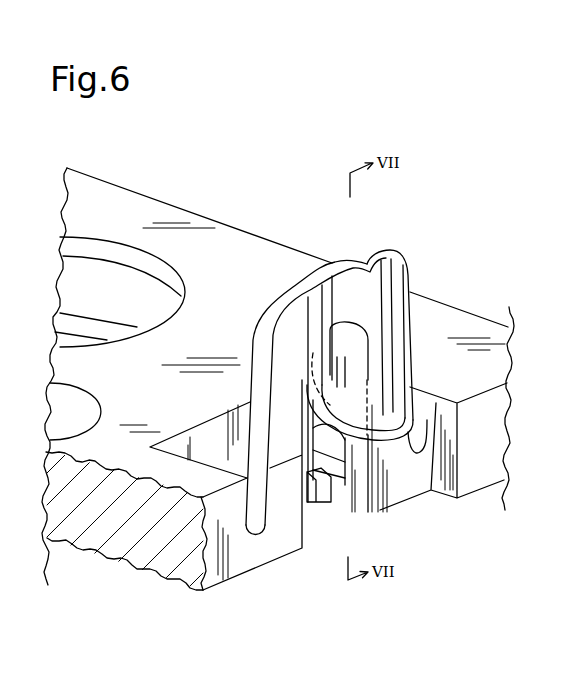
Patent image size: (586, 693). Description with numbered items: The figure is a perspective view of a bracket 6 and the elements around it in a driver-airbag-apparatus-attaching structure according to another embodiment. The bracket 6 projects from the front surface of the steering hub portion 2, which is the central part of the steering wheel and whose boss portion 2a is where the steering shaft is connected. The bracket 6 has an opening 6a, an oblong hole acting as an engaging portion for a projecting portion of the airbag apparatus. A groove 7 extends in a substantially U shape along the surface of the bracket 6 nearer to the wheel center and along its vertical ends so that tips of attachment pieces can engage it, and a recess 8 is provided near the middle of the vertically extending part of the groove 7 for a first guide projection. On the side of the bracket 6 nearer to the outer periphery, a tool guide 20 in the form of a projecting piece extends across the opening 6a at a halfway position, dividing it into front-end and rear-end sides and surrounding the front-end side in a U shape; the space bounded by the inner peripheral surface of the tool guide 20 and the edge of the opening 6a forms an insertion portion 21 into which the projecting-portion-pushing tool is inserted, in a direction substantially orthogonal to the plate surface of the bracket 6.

The steering hub portion 2 is at (230, 240).
The boss portion 2a is at (102, 257).
The bracket 6 is at (412, 310).
The opening 6a is at (374, 340).
The groove 7 is at (215, 433).
The recess 8 is at (313, 500).
The tool guide 20 is at (387, 427).
The insertion portion 21 is at (358, 366).